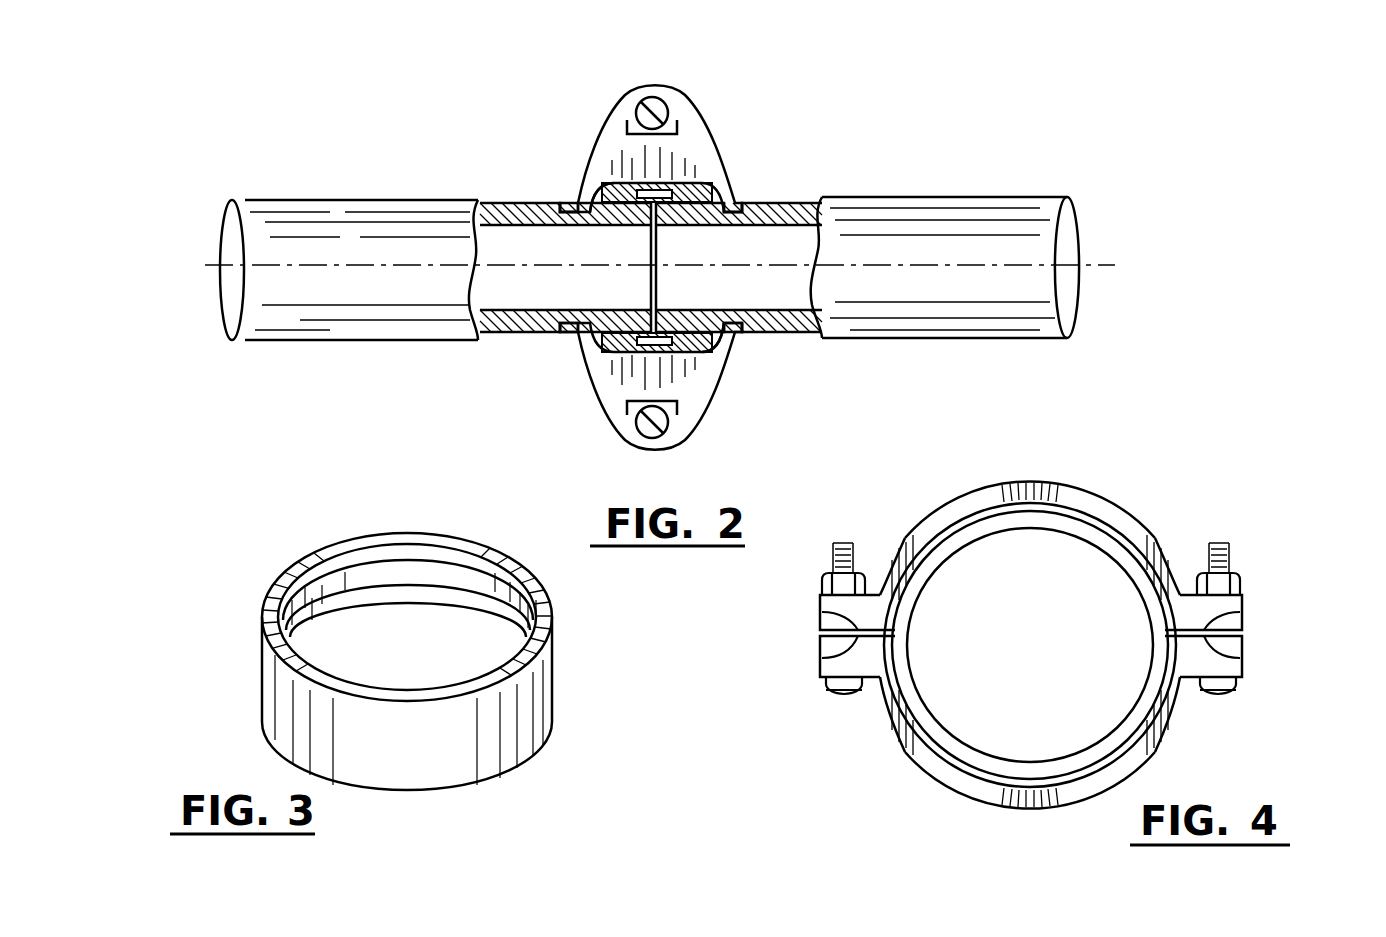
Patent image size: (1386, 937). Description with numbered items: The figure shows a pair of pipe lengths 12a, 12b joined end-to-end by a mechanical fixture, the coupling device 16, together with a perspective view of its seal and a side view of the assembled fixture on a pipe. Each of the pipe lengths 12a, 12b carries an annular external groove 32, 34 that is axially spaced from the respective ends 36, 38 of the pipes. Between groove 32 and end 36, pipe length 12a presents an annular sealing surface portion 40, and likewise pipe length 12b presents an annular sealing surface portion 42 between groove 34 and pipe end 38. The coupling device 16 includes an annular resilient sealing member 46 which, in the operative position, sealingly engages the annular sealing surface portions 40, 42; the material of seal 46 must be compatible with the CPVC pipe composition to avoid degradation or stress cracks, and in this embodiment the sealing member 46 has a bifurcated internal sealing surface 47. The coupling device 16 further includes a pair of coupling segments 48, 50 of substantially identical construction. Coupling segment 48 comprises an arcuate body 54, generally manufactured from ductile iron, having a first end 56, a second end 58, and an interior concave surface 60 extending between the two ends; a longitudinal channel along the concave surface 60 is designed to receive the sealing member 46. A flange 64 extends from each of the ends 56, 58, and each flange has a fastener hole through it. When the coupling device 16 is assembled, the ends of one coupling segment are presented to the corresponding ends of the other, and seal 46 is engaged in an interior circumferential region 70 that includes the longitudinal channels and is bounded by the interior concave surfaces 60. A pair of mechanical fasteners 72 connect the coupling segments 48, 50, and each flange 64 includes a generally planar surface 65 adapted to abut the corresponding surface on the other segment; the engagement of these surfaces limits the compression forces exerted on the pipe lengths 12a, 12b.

In FIG. 2, the pipe length 12a is at (387, 200).
In FIG. 2, the pipe length 12b is at (1000, 197).
In FIG. 2, the coupling device 16 is at (684, 115).
In FIG. 4, the coupling device 16 is at (1045, 622).
In FIG. 2, the annular external groove 32 is at (568, 208).
In FIG. 2, the annular external groove 34 is at (735, 208).
In FIG. 2, the end 36 is at (652, 282).
In FIG. 2, the end 38 is at (658, 250).
In FIG. 2, the annular sealing surface portion 40 is at (590, 340).
In FIG. 2, the annular sealing surface portion 42 is at (710, 340).
In FIG. 2, the annular resilient sealing member 46 is at (700, 192).
In FIG. 3, the annular resilient sealing member 46 is at (325, 538).
In FIG. 4, the annular resilient sealing member 46 is at (998, 543).
In FIG. 2, the bifurcated internal sealing surface 47 is at (705, 350).
In FIG. 3, the bifurcated internal sealing surface 47 is at (450, 600).
In FIG. 4, the coupling segment 48 is at (1085, 500).
In FIG. 4, the coupling segment 50 is at (980, 780).
In FIG. 4, the arcuate body 54 is at (955, 505).
In FIG. 4, the first end 56 is at (870, 605).
In FIG. 4, the second end 58 is at (1186, 605).
In FIG. 2, the interior concave surface 60 is at (600, 212).
In FIG. 4, the flange 64 is at (845, 620).
In FIG. 4, the generally planar surface 65 is at (845, 660).
In FIG. 2, the interior circumferential region 70 is at (698, 192).
In FIG. 4, the mechanical fastener 72 is at (845, 692).